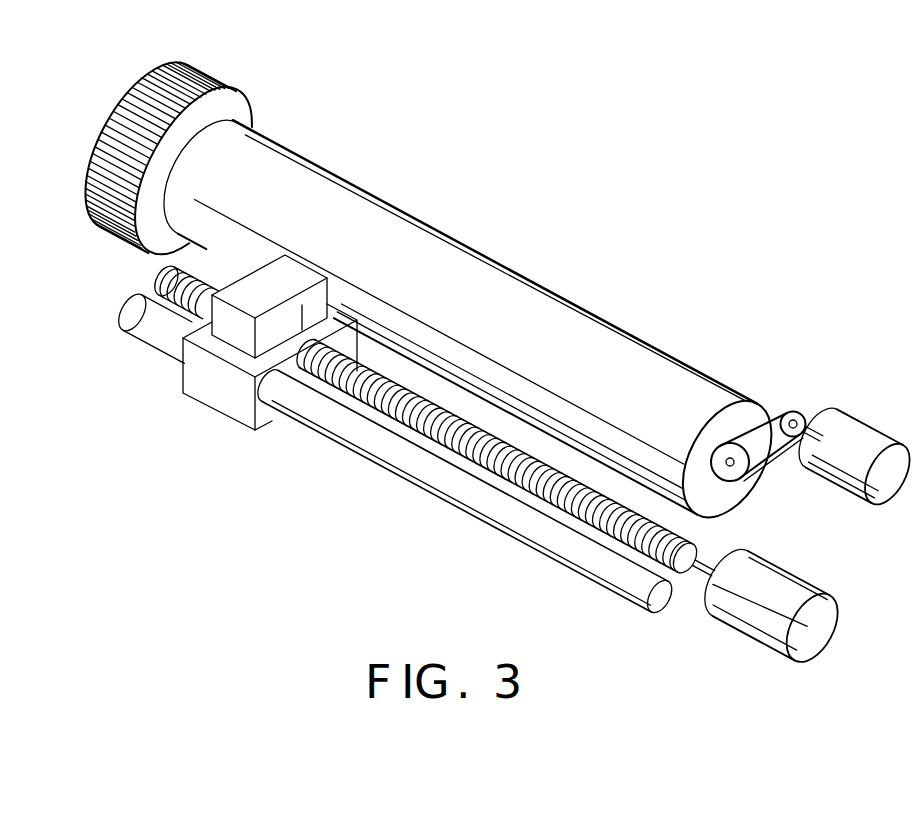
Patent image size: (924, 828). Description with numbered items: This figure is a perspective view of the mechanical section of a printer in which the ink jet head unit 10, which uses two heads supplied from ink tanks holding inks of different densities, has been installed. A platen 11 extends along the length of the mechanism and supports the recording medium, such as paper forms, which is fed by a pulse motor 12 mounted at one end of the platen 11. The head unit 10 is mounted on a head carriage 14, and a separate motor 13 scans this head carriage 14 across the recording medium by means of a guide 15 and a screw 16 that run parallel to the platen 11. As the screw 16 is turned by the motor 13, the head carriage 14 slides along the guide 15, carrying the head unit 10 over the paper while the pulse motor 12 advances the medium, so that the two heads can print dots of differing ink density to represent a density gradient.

The ink jet head unit 10 is at (300, 272).
The platen 11 is at (650, 350).
The pulse motor 12 is at (860, 427).
The motor 13 is at (737, 625).
The head carriage 14 is at (220, 400).
The guide 15 is at (472, 520).
The screw 16 is at (687, 535).